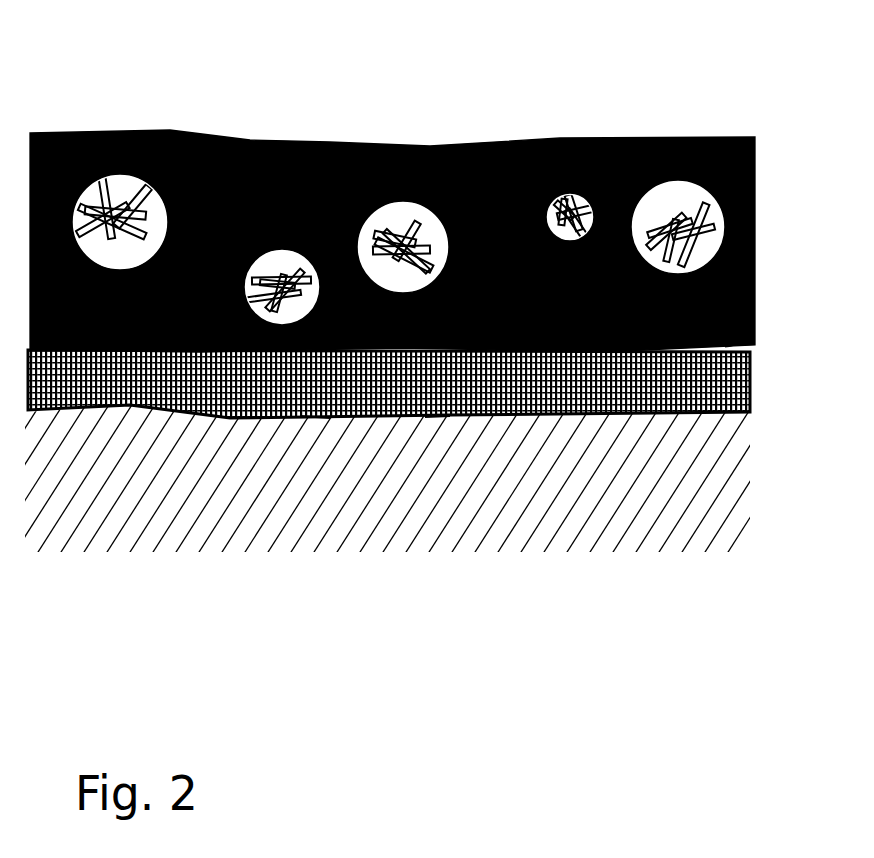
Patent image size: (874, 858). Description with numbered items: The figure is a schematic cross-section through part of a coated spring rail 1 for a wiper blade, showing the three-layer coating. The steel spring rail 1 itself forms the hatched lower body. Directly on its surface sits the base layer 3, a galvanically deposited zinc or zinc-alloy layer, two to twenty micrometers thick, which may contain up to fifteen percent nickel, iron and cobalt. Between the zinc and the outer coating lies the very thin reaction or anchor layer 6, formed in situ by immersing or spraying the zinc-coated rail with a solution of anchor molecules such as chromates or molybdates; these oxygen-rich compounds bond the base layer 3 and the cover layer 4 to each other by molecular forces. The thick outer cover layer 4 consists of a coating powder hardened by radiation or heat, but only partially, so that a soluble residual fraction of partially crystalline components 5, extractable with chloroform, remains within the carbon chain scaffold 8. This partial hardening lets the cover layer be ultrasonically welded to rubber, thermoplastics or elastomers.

The spring rail 1 is at (655, 492).
The base layer 3 is at (728, 380).
The cover layer 4 is at (432, 140).
The partially crystalline components 5 is at (170, 130).
The anchor layer 6 is at (437, 420).
The carbon chain scaffold 8 is at (753, 210).